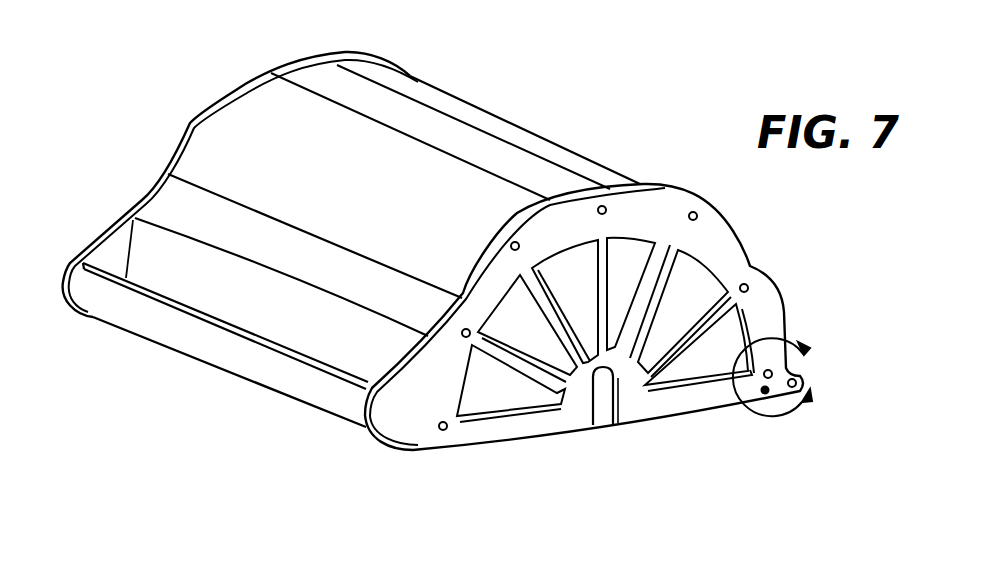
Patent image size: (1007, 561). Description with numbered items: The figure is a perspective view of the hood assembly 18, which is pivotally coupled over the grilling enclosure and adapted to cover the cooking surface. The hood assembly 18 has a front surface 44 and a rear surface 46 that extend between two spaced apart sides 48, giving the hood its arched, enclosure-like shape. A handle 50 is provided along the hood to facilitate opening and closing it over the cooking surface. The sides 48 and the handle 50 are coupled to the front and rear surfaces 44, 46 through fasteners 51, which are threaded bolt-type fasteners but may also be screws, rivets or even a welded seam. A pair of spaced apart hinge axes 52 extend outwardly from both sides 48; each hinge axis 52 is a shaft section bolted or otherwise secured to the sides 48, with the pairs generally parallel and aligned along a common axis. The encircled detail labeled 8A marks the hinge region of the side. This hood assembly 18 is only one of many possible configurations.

The hood assembly 18 is at (578, 141).
The front surface 44 is at (207, 218).
The rear surface 46 is at (550, 111).
The sides 48 is at (182, 124).
The handle 50 is at (158, 330).
The fasteners 51 is at (695, 211).
The hinge axes 52 is at (766, 394).
The detail view circle 8A is at (787, 377).